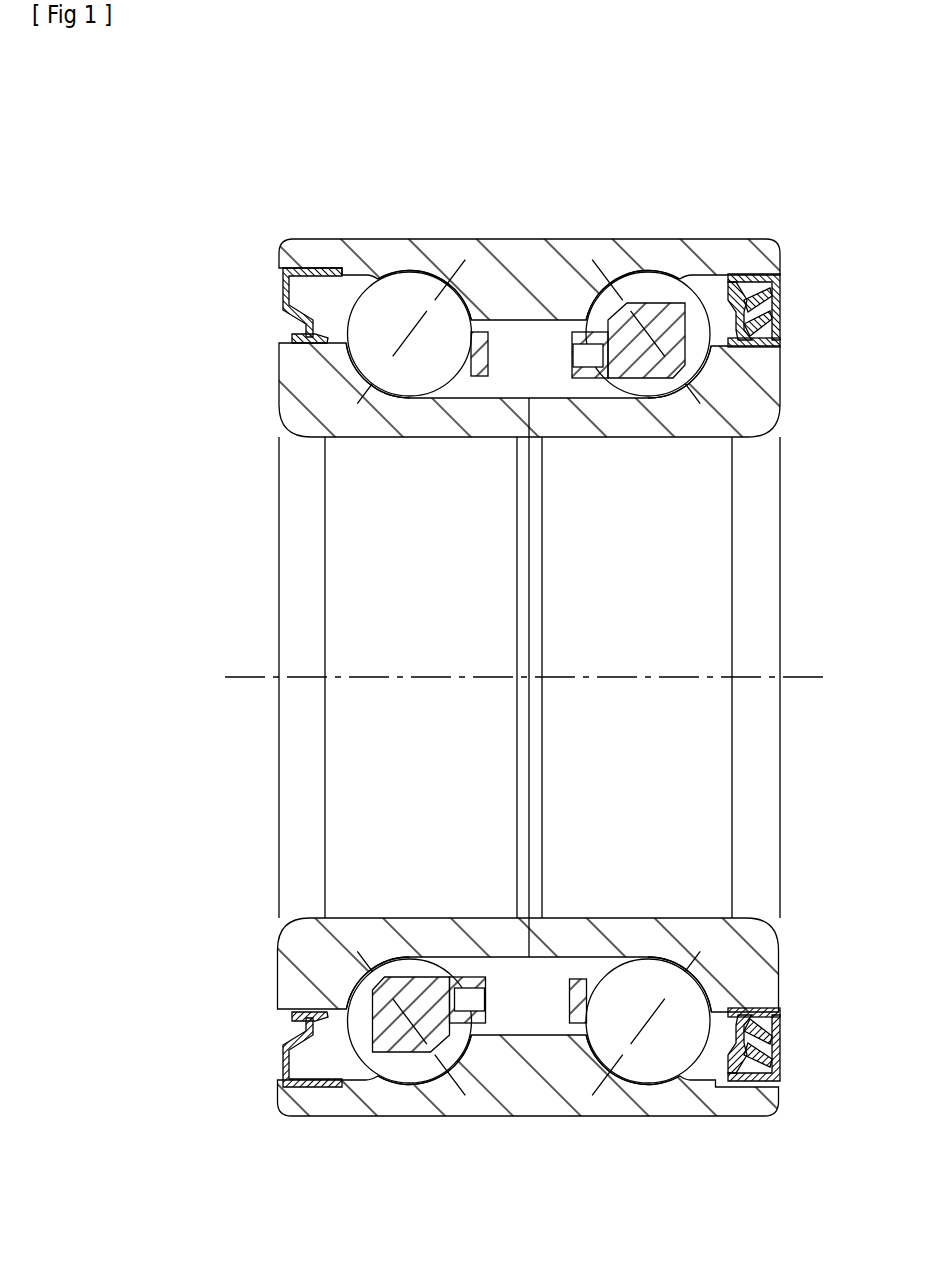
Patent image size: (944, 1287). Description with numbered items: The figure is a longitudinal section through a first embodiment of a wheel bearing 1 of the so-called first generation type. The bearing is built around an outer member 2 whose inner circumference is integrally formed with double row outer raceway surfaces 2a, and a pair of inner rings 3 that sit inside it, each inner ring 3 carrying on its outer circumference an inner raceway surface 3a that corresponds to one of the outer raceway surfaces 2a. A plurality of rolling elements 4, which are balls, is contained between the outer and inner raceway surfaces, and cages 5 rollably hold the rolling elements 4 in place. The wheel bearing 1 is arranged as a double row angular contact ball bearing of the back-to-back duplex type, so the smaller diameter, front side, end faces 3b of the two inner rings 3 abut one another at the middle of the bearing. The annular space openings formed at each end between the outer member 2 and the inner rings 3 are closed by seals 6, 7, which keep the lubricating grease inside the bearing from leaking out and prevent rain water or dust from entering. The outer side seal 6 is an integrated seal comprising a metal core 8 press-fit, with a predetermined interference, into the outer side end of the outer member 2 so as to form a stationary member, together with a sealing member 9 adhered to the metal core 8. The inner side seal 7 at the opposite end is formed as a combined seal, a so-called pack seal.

The wheel bearing 1 is at (250, 213).
The outer member 2 is at (563, 255).
The outer raceway surface 2a is at (458, 306).
The inner ring 3 is at (300, 384).
The inner raceway surface 3a is at (377, 369).
The smaller diameter end face 3b is at (517, 417).
The rolling element 4 is at (457, 1070).
The cage 5 is at (572, 983).
The outer side seal 6 is at (187, 250).
The inner side seal 7 is at (777, 309).
The metal core 8 is at (313, 268).
The sealing member 9 is at (303, 329).